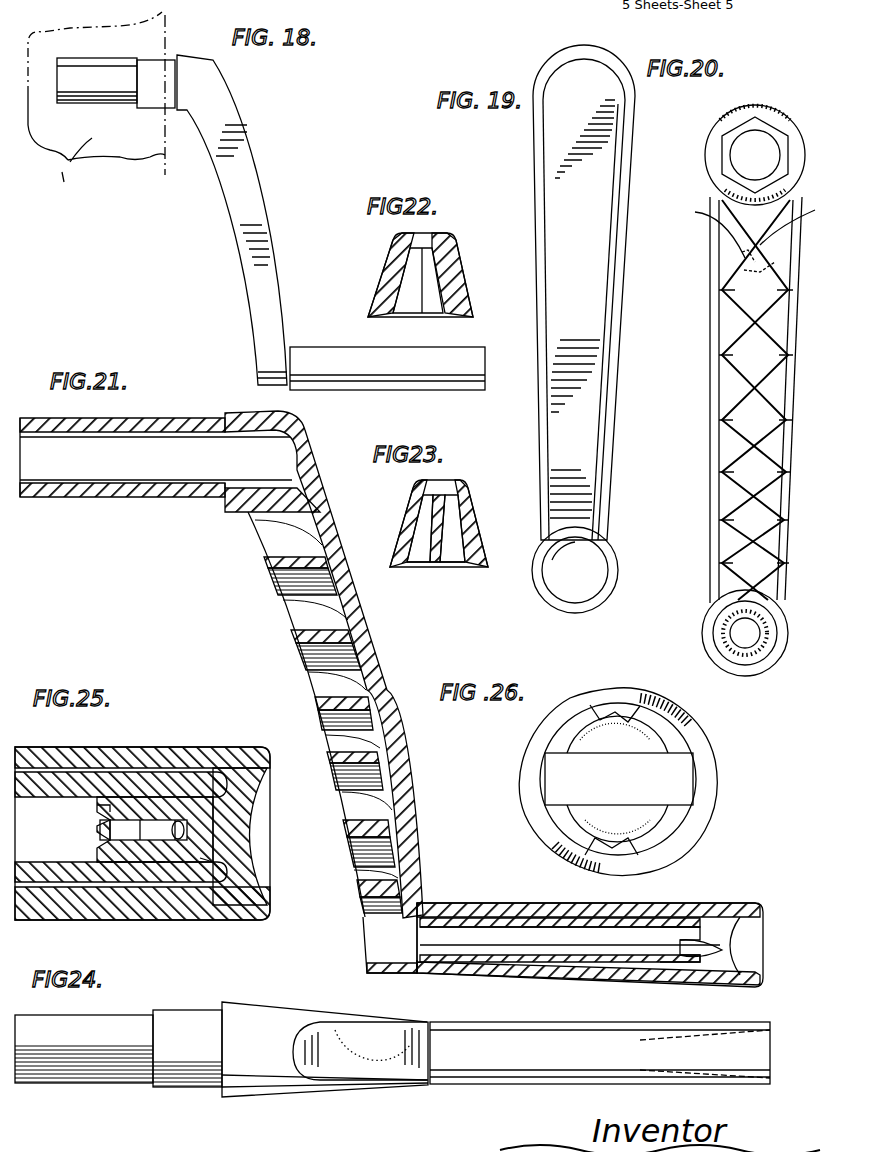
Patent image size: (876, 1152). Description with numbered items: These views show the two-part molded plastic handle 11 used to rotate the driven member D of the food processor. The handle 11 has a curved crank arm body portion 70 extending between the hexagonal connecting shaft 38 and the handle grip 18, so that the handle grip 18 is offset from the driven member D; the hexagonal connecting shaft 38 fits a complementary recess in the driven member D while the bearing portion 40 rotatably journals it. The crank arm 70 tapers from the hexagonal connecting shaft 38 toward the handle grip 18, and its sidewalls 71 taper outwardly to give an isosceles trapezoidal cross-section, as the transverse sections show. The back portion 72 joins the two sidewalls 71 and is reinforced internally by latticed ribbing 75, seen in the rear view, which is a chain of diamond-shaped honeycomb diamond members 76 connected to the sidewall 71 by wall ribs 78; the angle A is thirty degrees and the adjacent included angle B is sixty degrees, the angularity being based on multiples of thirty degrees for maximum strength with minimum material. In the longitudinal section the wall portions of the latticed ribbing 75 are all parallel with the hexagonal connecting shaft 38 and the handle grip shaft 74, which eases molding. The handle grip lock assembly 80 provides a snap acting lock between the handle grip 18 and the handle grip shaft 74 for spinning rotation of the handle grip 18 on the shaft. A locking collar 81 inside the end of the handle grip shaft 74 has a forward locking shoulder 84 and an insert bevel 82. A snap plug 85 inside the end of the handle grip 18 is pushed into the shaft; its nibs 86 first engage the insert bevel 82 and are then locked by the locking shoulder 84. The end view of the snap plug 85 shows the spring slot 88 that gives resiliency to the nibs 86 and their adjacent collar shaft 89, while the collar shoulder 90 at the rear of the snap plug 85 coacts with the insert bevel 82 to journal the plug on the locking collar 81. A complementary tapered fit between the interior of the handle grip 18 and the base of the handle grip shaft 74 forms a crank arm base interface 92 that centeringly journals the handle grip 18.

In FIG. 18, the handle 11 is at (280, 155).
In FIG. 19, the handle 11 is at (520, 182).
In FIG. 20, the handle 11 is at (710, 520).
In FIG. 21, the handle 11 is at (386, 665).
In FIG. 24, the handle 11 is at (277, 996).
In FIG. 18, the handle grip 18 is at (326, 355).
In FIG. 19, the handle grip 18 is at (540, 588).
In FIG. 20, the handle grip 18 is at (705, 640).
In FIG. 21, the handle grip 18 is at (660, 904).
In FIG. 25, the handle grip 18 is at (125, 752).
In FIG. 24, the handle grip 18 is at (476, 1060).
In FIG. 18, the hexagonal connecting shaft 38 is at (116, 83).
In FIG. 20, the hexagonal connecting shaft 38 is at (722, 152).
In FIG. 21, the hexagonal connecting shaft 38 is at (170, 418).
In FIG. 24, the hexagonal connecting shaft 38 is at (110, 1068).
In FIG. 24, the bearing portion 40 is at (190, 1078).
In FIG. 18, the crank arm body portion 70 is at (270, 222).
In FIG. 24, the crank arm body portion 70 is at (312, 1093).
In FIG. 18, the sidewalls 71 is at (268, 272).
In FIG. 19, the sidewalls 71 is at (612, 405).
In FIG. 20, the sidewalls 71 is at (710, 465).
In FIG. 22, the sidewalls 71 is at (378, 290).
In FIG. 23, the sidewalls 71 is at (400, 527).
In FIG. 19, the back portion 72 is at (548, 202).
In FIG. 22, the back portion 72 is at (436, 236).
In FIG. 23, the back portion 72 is at (447, 481).
In FIG. 21, the back portion 72 is at (397, 762).
In FIG. 24, the back portion 72 is at (366, 1072).
In FIG. 21, the handle grip shaft 74 is at (476, 903).
In FIG. 25, the handle grip shaft 74 is at (60, 770).
In FIG. 20, the latticed ribbing 75 is at (740, 355).
In FIG. 20, the diamond members 76 is at (770, 270).
In FIG. 20, the wall ribs 78 is at (720, 575).
In FIG. 23, the wall ribs 78 is at (462, 567).
In FIG. 25, the handle grip lock assembly 80 is at (193, 730).
In FIG. 21, the locking collar 81 is at (705, 915).
In FIG. 25, the locking collar 81 is at (148, 800).
In FIG. 25, the insert bevel 82 is at (152, 900).
In FIG. 25, the forward locking shoulder 84 is at (130, 880).
In FIG. 25, the snap plug 85 is at (200, 834).
In FIG. 26, the snap plug 85 is at (722, 768).
In FIG. 25, the nibs 86 is at (110, 815).
In FIG. 26, the nibs 86 is at (605, 715).
In FIG. 25, the spring slot 88 is at (110, 828).
In FIG. 26, the spring slot 88 is at (550, 765).
In FIG. 26, the collar shaft 89 is at (650, 745).
In FIG. 25, the collar shoulder 90 is at (200, 850).
In FIG. 26, the collar shoulder 90 is at (672, 820).
In FIG. 21, the crank arm base interface 92 is at (425, 903).
In FIG. 18, the driven member D is at (96, 113).
In FIG. 20, the angle A is at (709, 229).
In FIG. 20, the included angle B is at (796, 218).